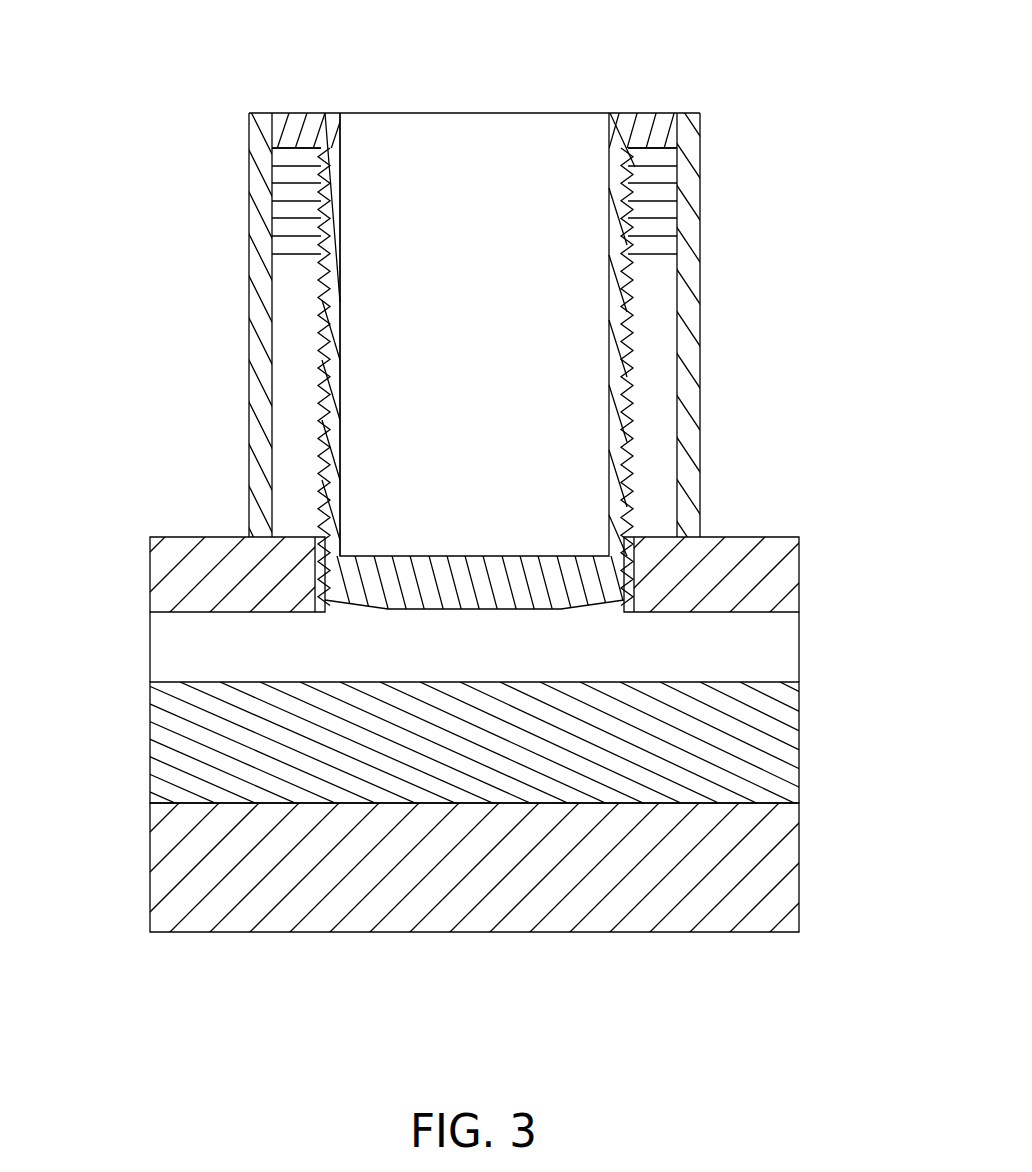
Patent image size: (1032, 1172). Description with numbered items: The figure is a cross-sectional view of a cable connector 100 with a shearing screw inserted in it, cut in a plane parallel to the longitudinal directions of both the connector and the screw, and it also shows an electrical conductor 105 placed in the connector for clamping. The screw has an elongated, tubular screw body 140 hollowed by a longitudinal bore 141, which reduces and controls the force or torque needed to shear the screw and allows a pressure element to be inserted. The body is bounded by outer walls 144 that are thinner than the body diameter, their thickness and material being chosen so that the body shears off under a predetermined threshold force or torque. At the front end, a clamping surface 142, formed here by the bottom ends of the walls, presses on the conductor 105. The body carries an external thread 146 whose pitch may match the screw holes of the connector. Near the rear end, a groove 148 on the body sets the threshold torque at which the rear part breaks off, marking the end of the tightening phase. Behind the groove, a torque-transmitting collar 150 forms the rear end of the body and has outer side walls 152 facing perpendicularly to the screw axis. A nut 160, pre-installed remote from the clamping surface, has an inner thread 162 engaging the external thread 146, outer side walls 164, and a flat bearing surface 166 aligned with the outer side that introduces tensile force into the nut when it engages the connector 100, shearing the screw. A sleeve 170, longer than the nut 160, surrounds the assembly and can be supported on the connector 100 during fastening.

The cable connector 100 is at (774, 600).
The electrical conductor 105 is at (231, 759).
The screw body 140 is at (593, 580).
The longitudinal bore 141 is at (568, 462).
The clamping surface 142 is at (444, 618).
The outer walls 144 is at (628, 515).
The external thread 146 is at (319, 401).
The groove 148 is at (346, 158).
The collar 150 is at (289, 131).
The outer side walls 152 is at (685, 131).
The nut 160 is at (285, 194).
The inner thread 162 is at (634, 160).
The outer side walls 164 is at (685, 221).
The bearing surface 166 is at (658, 262).
The sleeve 170 is at (248, 311).